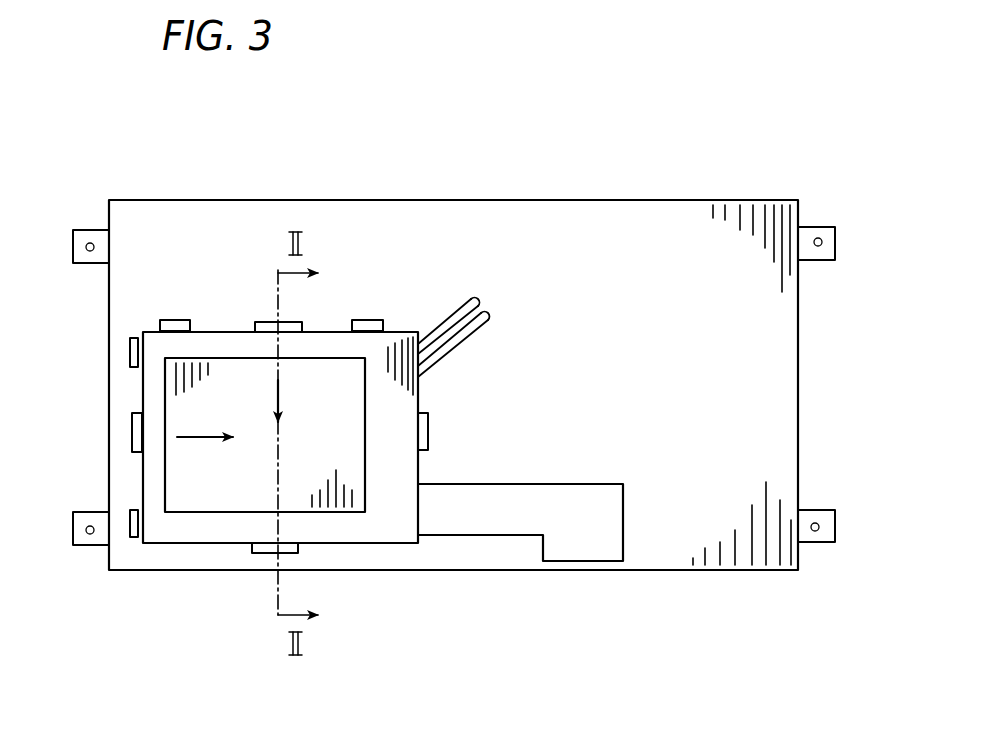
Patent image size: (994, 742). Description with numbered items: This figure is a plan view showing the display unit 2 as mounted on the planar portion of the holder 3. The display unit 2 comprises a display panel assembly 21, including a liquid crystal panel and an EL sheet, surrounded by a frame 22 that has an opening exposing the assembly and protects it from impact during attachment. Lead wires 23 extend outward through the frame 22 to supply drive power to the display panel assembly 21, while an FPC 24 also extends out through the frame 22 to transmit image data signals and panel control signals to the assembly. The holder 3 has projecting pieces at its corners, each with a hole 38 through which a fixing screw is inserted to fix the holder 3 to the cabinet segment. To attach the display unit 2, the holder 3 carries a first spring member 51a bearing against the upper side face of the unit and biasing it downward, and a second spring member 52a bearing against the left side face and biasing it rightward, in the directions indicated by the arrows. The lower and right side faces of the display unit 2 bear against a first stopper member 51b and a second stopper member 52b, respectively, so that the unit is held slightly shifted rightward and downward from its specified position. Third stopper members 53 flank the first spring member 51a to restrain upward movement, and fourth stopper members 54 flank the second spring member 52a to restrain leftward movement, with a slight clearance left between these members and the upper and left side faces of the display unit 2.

The display unit 2 is at (213, 545).
The holder 3 is at (698, 197).
The display panel assembly 21 is at (236, 402).
The frame 22 is at (387, 530).
The lead wires 23 is at (475, 300).
The FPC 24 is at (583, 497).
The hole 38 is at (90, 243).
The first spring member 51a is at (302, 322).
The first stopper member 51b is at (258, 553).
The second spring member 52a is at (132, 435).
The second stopper member 52b is at (428, 428).
The third stopper members 53 is at (175, 320).
The fourth stopper members 54 is at (130, 350).